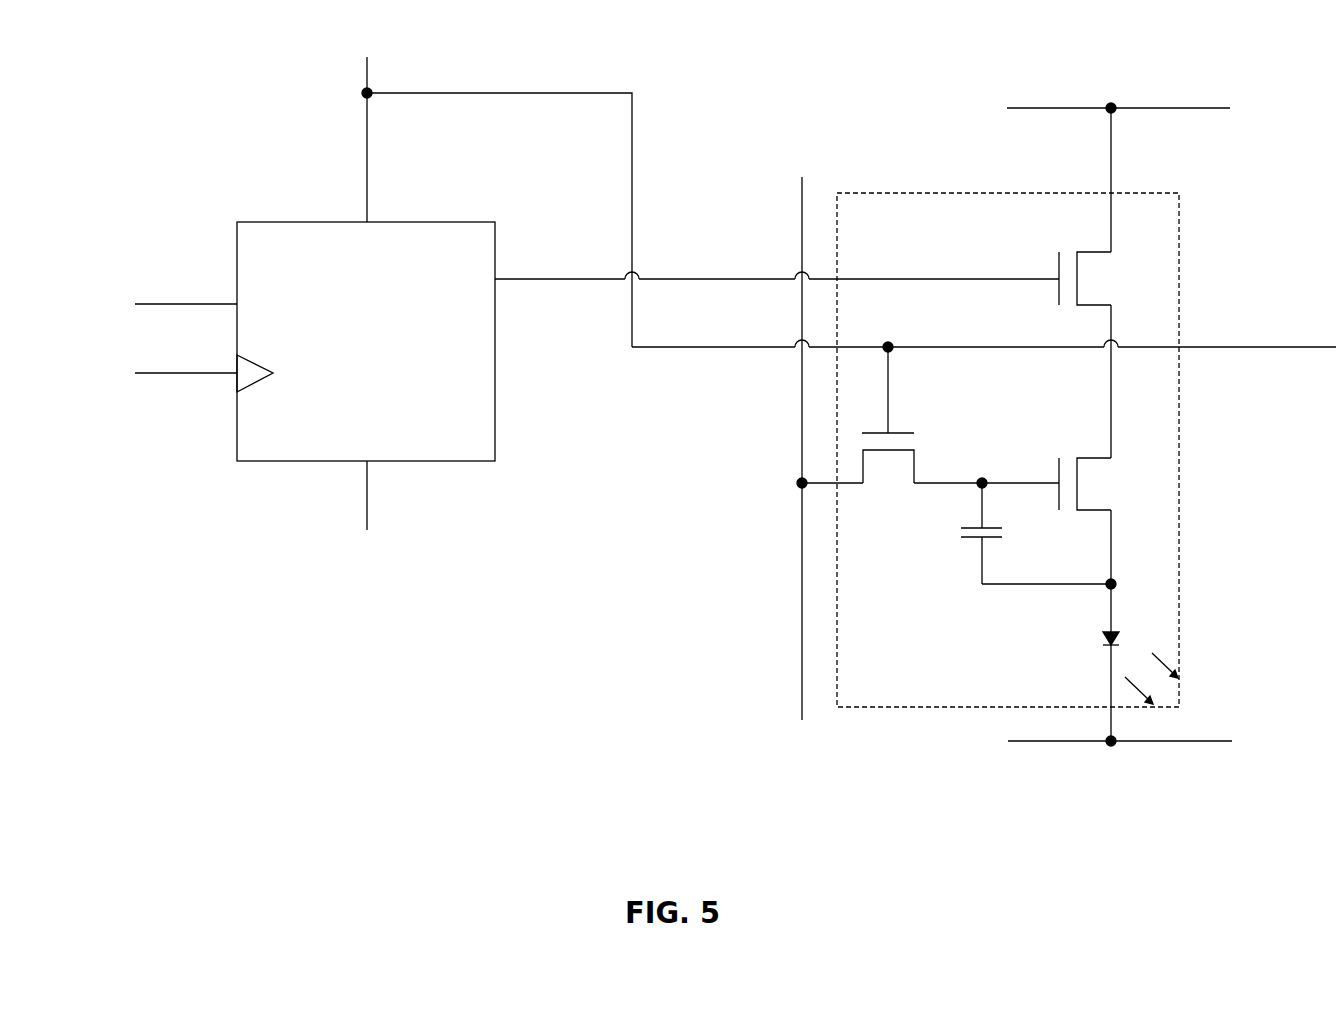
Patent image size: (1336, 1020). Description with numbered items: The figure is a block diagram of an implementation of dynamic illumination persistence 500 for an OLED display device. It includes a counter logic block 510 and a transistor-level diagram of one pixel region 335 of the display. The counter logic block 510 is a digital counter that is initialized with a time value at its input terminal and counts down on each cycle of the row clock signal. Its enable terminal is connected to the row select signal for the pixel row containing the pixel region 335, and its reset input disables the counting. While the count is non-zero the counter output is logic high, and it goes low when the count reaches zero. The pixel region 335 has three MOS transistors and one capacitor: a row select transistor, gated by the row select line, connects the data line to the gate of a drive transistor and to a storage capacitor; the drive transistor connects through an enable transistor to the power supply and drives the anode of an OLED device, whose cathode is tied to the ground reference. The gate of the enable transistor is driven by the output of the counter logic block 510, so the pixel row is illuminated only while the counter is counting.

The implementation of dynamic illumination persistence 500 is at (1271, 25).
The counter logic block 510 is at (366, 341).
The pixel region 335 is at (1188, 189).